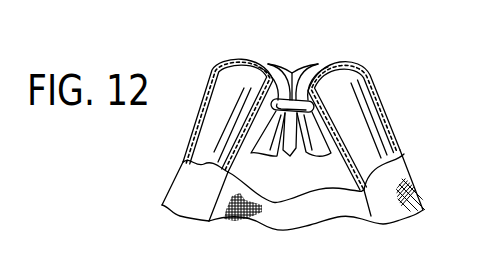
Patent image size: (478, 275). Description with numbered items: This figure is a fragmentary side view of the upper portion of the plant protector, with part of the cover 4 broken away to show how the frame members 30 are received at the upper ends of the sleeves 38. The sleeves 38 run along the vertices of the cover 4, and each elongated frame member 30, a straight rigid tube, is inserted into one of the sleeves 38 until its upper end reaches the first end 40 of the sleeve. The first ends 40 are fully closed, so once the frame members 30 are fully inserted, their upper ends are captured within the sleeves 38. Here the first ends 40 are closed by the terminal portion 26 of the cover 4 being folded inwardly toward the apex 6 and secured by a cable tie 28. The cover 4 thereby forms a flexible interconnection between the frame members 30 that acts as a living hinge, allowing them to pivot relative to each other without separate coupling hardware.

The cover 4 is at (280, 217).
The apex 6 is at (292, 72).
The terminal portion 26 is at (291, 165).
The cable tie 28 is at (345, 122).
The frame members 30 is at (205, 143).
The sleeves 38 is at (209, 89).
The first end 40 is at (244, 65).